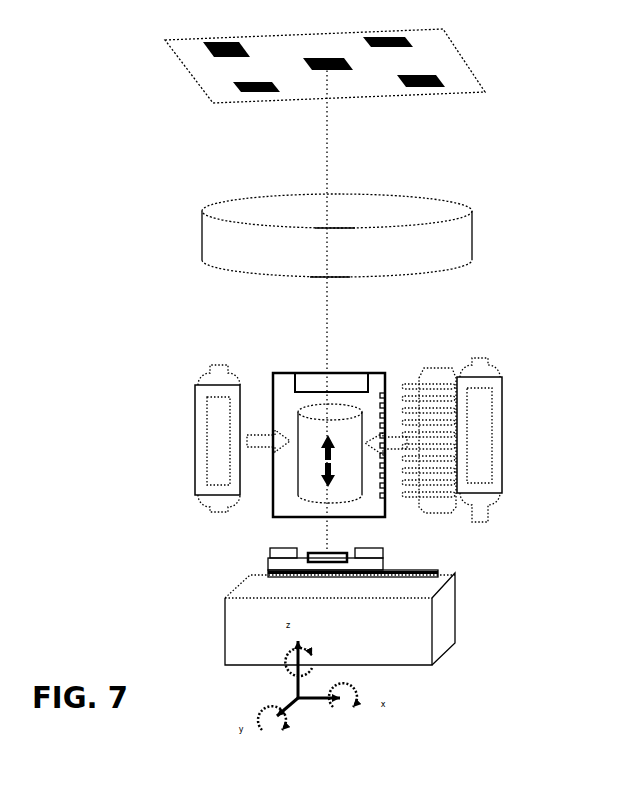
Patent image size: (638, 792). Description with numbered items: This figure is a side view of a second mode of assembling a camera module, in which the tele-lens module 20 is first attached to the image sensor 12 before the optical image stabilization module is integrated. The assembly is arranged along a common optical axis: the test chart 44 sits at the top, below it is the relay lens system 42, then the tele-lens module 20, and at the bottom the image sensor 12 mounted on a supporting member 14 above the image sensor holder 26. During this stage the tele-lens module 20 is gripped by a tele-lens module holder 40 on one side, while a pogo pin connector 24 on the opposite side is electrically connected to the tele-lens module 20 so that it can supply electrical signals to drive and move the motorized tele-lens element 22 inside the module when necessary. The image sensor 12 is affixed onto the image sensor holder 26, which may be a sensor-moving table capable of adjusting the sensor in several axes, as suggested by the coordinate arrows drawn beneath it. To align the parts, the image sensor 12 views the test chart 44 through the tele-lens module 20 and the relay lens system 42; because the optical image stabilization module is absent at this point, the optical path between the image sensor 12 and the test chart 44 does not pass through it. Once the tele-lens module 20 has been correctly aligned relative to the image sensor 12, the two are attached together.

The test chart 44 is at (437, 58).
The relay lens system 42 is at (443, 243).
The tele-lens module 20 is at (272, 375).
The motorized tele-lens element 22 is at (308, 487).
The tele-lens module holder 40 is at (195, 440).
The pogo pin connector 24 is at (437, 440).
The image sensor 12 is at (267, 562).
The carrier plate 14 is at (435, 570).
The image sensor holder 26 is at (410, 628).